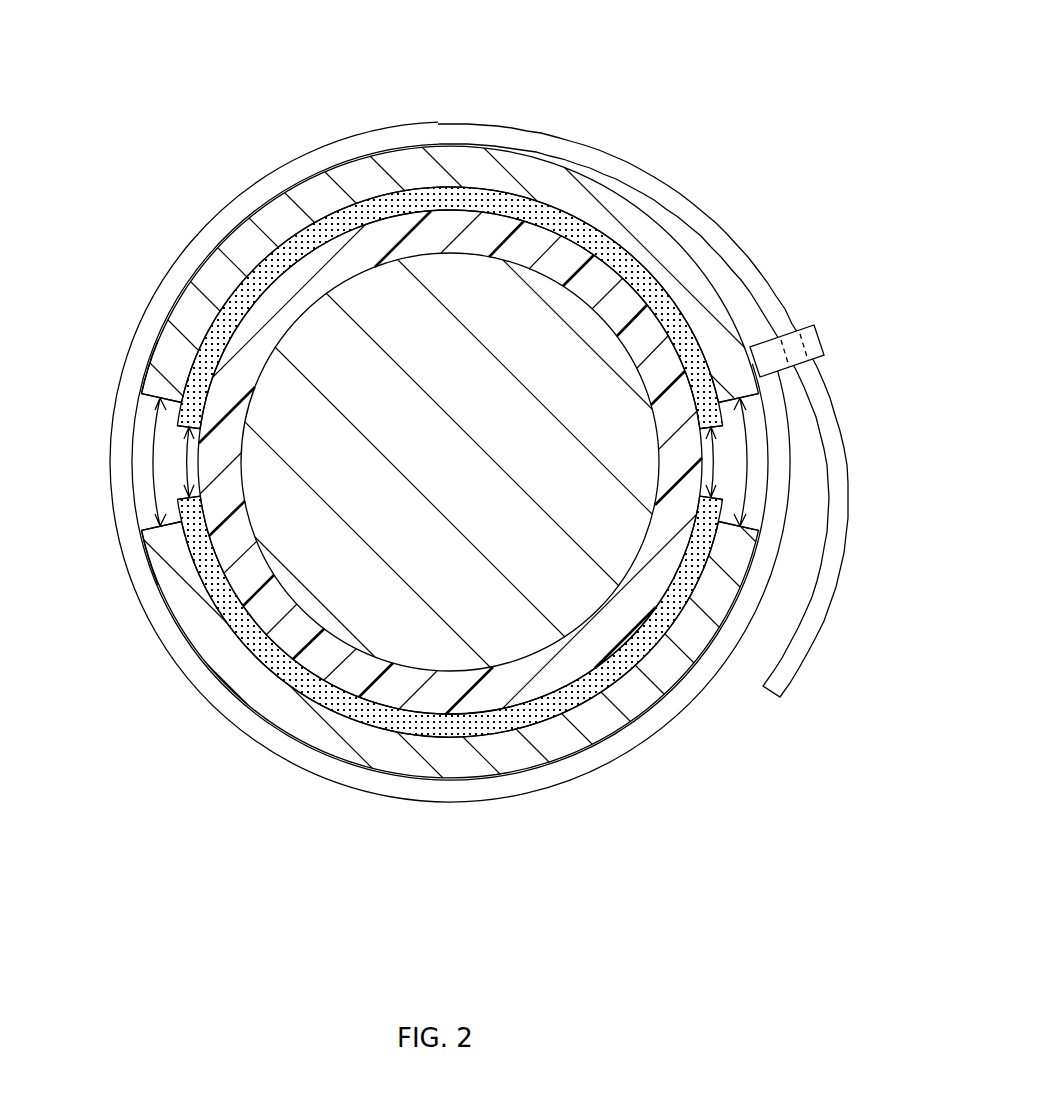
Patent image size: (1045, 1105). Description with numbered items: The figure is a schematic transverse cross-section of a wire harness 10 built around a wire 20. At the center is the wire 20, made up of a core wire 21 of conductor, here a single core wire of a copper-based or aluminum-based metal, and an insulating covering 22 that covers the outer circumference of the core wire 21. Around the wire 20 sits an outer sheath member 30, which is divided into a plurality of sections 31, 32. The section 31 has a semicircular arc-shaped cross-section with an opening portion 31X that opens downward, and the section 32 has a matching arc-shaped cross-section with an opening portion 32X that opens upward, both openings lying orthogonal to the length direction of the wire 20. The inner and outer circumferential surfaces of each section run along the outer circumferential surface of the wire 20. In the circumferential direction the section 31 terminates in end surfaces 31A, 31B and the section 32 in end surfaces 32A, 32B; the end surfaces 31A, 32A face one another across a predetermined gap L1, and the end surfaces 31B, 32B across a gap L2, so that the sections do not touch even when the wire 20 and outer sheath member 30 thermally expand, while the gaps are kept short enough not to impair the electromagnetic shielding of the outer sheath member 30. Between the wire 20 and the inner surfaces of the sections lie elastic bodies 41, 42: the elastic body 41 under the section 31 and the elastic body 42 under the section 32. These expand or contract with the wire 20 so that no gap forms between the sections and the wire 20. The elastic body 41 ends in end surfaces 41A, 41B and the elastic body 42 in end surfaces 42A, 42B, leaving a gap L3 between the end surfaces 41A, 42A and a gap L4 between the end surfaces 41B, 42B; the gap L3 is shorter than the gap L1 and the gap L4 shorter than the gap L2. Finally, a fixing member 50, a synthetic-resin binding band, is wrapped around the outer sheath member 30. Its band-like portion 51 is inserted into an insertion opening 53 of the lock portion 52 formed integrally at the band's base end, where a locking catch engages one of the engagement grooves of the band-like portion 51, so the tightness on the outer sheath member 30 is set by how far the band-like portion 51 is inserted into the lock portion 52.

The wire harness 10 is at (724, 59).
The wire 20 is at (450, 559).
The core wire 21 is at (420, 650).
The insulating covering 22 is at (470, 705).
The outer sheath member 30 is at (473, 449).
The section 31 is at (470, 249).
The end surface 31A is at (760, 408).
The end surface 31B is at (152, 400).
The opening portion 31X is at (158, 352).
The section 32 is at (473, 671).
The end surface 32A is at (760, 526).
The end surface 32B is at (155, 528).
The opening portion 32X is at (168, 562).
The elastic body 41 is at (449, 260).
The end surface 41A is at (700, 440).
The end surface 41B is at (203, 437).
The elastic body 42 is at (463, 622).
The end surface 42A is at (700, 488).
The end surface 42B is at (203, 488).
The fixing member 50 is at (501, 441).
The band-like portion 51 is at (748, 272).
The lock portion 52 is at (815, 332).
The insertion opening 53 is at (822, 362).
The gap L1 is at (752, 462).
The gap L2 is at (158, 462).
The gap L3 is at (705, 462).
The gap L4 is at (197, 462).